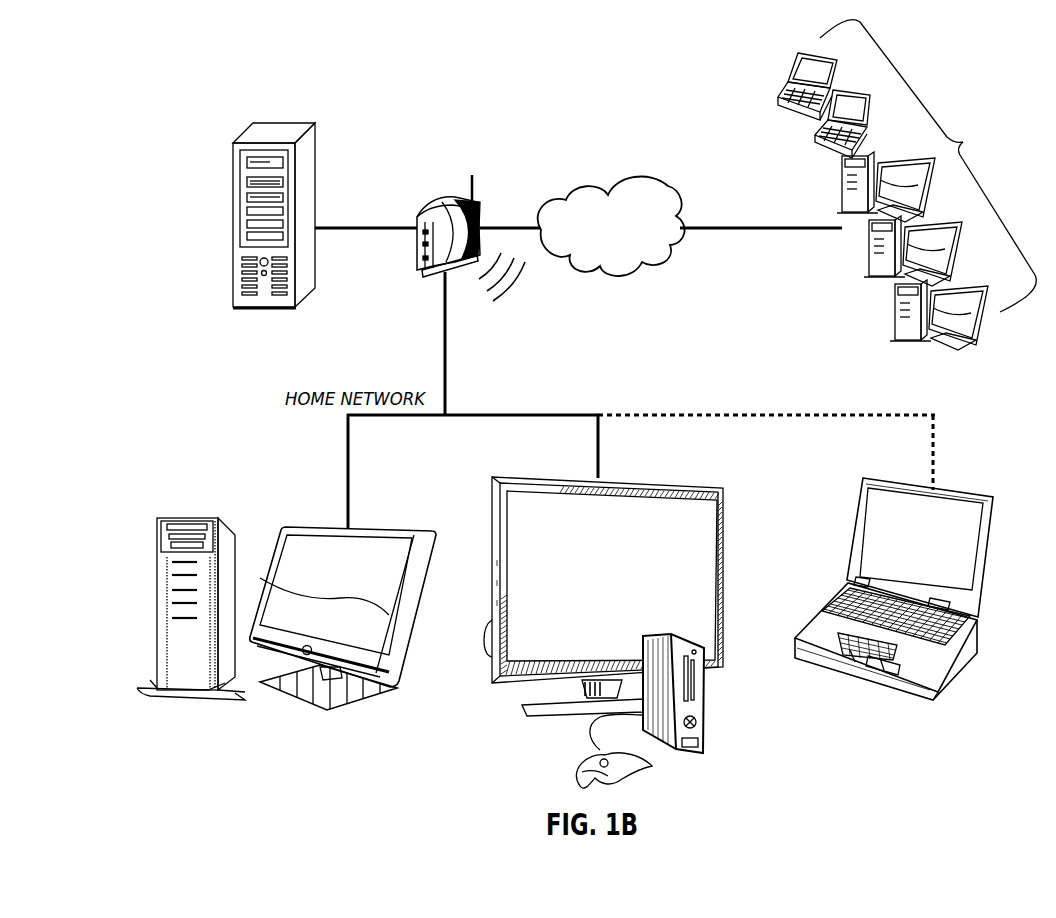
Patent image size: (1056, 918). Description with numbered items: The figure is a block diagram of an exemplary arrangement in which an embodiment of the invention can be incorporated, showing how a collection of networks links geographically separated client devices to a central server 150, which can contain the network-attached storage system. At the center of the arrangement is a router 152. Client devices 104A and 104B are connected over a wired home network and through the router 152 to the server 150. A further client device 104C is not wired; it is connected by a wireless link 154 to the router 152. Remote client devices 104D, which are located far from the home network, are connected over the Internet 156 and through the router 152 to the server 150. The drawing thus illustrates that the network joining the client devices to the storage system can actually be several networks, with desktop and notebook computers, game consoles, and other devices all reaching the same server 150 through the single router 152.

The server 150 is at (291, 195).
The router 152 is at (469, 213).
The wireless link 154 is at (528, 299).
The Internet 156 is at (611, 208).
The client device 104A is at (306, 627).
The client device 104B is at (648, 632).
The client device 104C is at (921, 597).
The client devices 104D is at (907, 185).